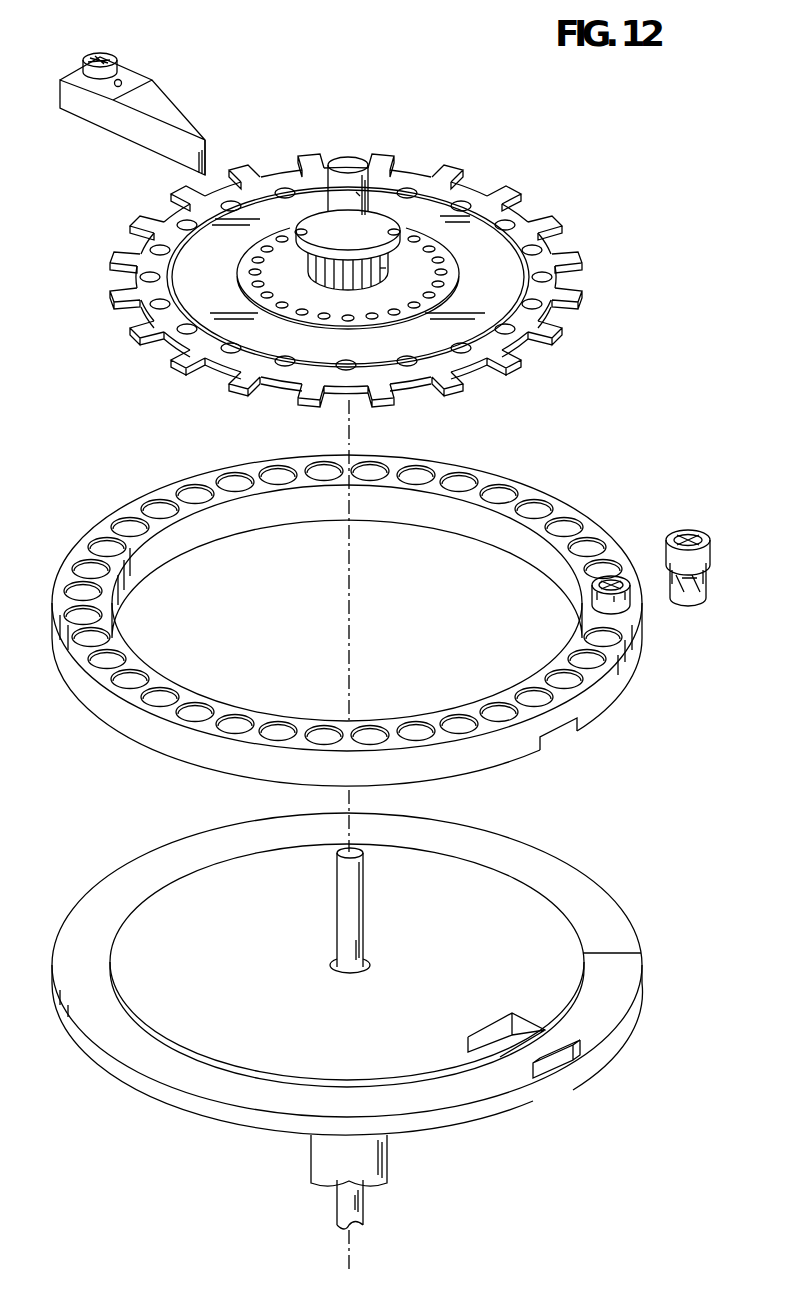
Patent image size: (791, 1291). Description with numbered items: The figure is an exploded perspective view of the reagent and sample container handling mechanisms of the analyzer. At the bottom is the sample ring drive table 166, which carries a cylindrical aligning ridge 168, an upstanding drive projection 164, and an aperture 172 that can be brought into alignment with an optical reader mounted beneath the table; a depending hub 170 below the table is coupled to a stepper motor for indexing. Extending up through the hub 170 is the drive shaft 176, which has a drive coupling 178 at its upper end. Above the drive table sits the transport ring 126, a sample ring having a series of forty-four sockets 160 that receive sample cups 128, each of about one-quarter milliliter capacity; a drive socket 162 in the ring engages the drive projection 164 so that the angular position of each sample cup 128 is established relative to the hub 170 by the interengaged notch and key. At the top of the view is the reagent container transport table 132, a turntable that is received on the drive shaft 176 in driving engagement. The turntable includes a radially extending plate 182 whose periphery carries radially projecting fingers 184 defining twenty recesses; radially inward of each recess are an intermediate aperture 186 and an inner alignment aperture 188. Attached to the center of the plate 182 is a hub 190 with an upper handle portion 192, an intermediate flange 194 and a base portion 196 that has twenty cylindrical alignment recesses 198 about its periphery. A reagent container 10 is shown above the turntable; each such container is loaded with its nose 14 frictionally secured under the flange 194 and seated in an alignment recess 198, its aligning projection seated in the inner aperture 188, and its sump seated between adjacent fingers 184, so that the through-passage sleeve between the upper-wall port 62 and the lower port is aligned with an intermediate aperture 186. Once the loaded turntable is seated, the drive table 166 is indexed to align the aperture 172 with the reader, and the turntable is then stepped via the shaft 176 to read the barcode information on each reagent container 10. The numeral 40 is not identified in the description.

The reagent container 10 is at (130, 98).
The nose 14 is at (207, 150).
The vial cup 40 is at (87, 55).
The port 62 is at (121, 79).
The transport ring 126 is at (653, 522).
The sample cup 128 is at (630, 600).
The transport table 132 is at (374, 257).
The socket 160 is at (395, 620).
The drive socket 162 is at (576, 725).
The drive projection 164 is at (578, 1052).
The drive table 166 is at (378, 1031).
The cylindrical aligning ridge 168 is at (641, 953).
The depending hub 170 is at (320, 1155).
The aperture 172 is at (531, 1027).
The drive shaft 176 is at (343, 928).
The drive coupling 178 is at (361, 889).
The radially extending plate 182 is at (516, 226).
The radially projecting fingers 184 is at (245, 170).
The intermediate aperture 186 is at (525, 240).
The inner alignment aperture 188 is at (447, 271).
The hub 190 is at (349, 158).
The upper handle portion 192 is at (356, 192).
The intermediate flange 194 is at (382, 222).
The base portion 196 is at (322, 263).
The cylindrical alignment recess 198 is at (383, 271).